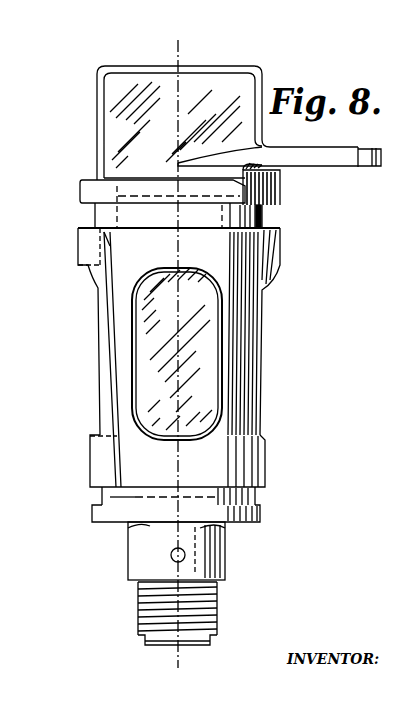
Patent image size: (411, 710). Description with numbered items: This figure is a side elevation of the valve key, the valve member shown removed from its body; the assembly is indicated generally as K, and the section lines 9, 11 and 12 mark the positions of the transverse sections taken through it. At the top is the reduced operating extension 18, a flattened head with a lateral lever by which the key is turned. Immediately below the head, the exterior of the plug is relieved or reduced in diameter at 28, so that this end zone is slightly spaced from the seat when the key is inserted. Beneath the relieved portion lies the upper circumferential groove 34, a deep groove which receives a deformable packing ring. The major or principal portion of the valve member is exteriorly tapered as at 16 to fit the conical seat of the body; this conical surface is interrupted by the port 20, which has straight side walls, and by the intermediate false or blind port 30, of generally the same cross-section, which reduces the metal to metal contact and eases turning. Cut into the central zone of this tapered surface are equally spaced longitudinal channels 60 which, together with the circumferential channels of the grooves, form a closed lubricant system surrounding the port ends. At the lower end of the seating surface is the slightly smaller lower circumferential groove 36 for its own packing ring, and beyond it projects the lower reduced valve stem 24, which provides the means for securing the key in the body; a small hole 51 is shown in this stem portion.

The section line 9- 9 is at (210, 54).
The section line 11- 11 is at (365, 250).
The section line 12- 12 is at (75, 325).
The exteriorly tapered major portion 16 is at (266, 453).
The reduced operating extension 18 is at (121, 93).
The port 20 is at (100, 404).
The valve stem 24 is at (142, 560).
The relieved portion 28 is at (80, 191).
The blind port 30 is at (208, 306).
The upper circumferential groove 34 is at (262, 215).
The lower circumferential groove 36 is at (258, 495).
The hole 51 is at (186, 553).
The longitudinal channel 60 is at (110, 300).
The valve assembly K is at (89, 168).